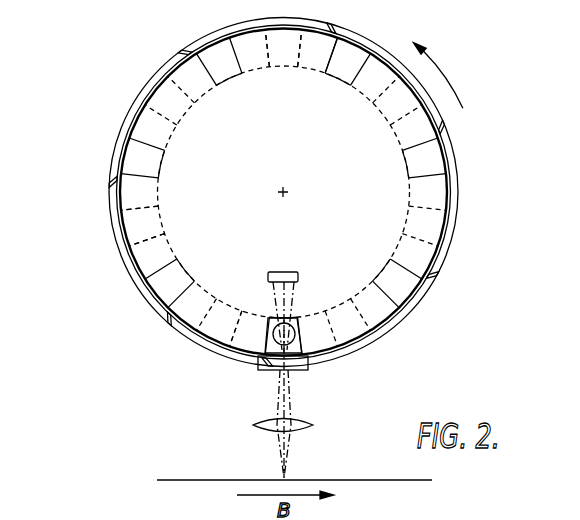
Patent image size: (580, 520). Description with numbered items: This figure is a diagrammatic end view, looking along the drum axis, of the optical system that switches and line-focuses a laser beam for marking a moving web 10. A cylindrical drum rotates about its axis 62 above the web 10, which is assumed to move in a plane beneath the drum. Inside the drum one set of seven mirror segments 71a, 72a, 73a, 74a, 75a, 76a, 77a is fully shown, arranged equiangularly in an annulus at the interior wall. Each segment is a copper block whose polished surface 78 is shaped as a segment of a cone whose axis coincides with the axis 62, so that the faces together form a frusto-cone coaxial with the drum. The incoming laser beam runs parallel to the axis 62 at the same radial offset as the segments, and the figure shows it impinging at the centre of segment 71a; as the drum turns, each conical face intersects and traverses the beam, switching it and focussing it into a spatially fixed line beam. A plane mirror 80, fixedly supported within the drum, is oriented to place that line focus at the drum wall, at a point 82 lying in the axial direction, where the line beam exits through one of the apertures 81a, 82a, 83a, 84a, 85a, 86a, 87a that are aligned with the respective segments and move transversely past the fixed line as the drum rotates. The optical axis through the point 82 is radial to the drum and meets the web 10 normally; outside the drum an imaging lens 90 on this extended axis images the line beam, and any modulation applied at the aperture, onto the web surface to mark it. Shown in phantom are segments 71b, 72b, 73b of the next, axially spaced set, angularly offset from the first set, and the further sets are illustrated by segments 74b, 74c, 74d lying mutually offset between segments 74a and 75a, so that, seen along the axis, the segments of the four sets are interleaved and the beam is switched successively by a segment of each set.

The web 10 is at (197, 480).
The axis 62 is at (286, 188).
The mirror segment 71a is at (292, 318).
The mirror segment 72a is at (188, 264).
The mirror segment 73a is at (163, 166).
The mirror segment 74a is at (236, 78).
The mirror segment 75a is at (335, 78).
The mirror segment 76a is at (403, 163).
The mirror segment 77a is at (398, 256).
The mirror segment 71b is at (258, 312).
The mirror segment 72b is at (168, 244).
The mirror segment 73b is at (172, 147).
The mirror segment 74b is at (255, 68).
The mirror segment 74c is at (285, 68).
The mirror segment 74d is at (312, 68).
The conical mirror face 78 is at (307, 369).
The plane mirror 80 is at (290, 269).
The aperture 81a is at (263, 364).
The aperture 82a is at (166, 313).
The aperture 83a is at (110, 178).
The aperture 84a is at (190, 46).
The aperture 85a is at (338, 27).
The aperture 86a is at (449, 136).
The aperture 87a is at (434, 290).
The point 82 is at (283, 371).
The imaging lens 90 is at (263, 427).